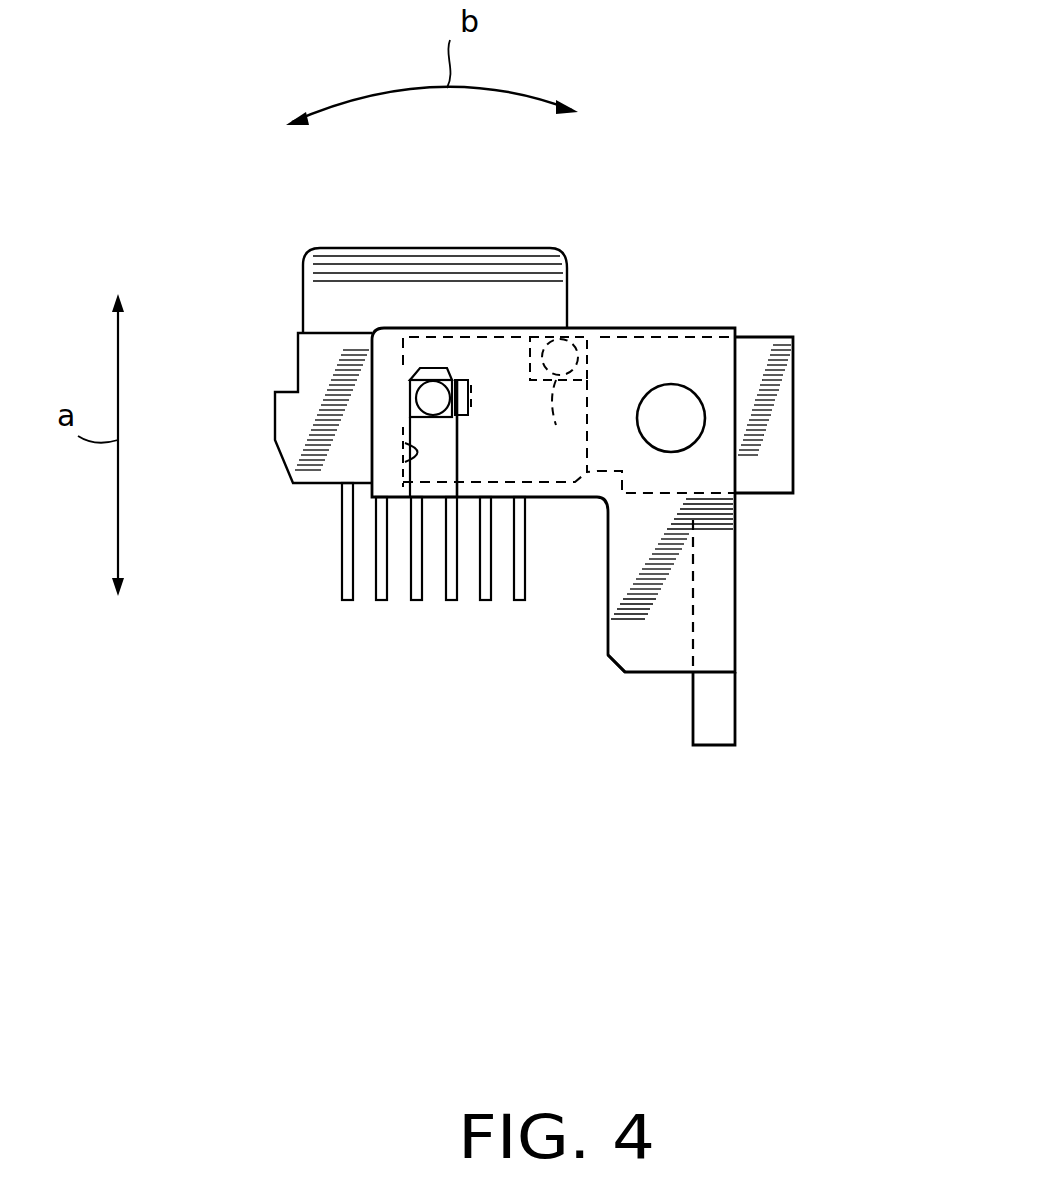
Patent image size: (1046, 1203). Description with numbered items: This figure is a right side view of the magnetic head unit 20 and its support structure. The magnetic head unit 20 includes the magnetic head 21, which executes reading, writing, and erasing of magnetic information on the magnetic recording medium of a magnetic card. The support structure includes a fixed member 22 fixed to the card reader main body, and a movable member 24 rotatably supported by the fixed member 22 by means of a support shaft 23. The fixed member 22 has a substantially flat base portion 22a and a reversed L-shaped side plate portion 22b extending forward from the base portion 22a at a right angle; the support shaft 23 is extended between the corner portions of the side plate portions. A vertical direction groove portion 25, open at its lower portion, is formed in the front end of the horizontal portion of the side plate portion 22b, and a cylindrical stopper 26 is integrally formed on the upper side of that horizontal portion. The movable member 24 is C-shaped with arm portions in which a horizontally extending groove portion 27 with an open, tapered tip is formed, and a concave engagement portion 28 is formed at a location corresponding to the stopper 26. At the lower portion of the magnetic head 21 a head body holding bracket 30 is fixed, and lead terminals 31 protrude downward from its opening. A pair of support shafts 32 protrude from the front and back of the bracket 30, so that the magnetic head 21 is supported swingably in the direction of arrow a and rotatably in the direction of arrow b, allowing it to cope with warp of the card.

The magnetic head unit 20 is at (706, 155).
The magnetic head 21 is at (404, 258).
The fixed member 22 is at (748, 591).
The base portion 22a is at (738, 718).
The reversed L-shaped side plate portion 22b is at (630, 658).
The support shaft 23 is at (674, 405).
The movable member 24 is at (800, 402).
The groove portion 25 is at (405, 452).
The stopper 26 is at (545, 337).
The groove portion 27 is at (472, 400).
The concave engagement portion 28 is at (567, 420).
The head body holding bracket 30 is at (292, 417).
The lead terminals 31 is at (340, 565).
The support shaft 32 is at (428, 393).